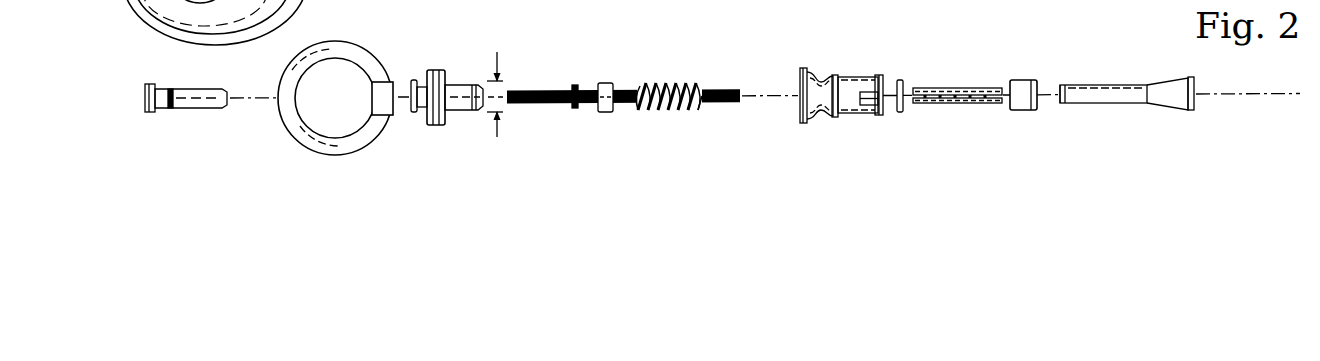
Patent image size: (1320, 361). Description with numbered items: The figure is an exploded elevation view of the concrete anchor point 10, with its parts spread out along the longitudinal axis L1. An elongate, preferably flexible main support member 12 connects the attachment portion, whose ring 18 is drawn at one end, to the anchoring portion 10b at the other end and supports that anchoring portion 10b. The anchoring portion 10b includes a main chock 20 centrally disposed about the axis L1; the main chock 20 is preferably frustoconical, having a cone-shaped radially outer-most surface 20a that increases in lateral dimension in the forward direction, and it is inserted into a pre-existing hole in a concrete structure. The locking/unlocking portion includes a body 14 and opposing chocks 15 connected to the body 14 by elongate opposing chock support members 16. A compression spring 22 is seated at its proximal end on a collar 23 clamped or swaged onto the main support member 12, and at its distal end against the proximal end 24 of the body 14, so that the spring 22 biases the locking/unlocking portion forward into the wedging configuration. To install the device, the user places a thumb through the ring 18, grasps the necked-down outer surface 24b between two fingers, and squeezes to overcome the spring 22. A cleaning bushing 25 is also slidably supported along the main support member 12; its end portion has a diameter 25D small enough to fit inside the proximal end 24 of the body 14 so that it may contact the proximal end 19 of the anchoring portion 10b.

The anchor point 10 is at (1007, 20).
The anchoring portion 10b is at (1107, 112).
The main support member 12 is at (552, 88).
The body 14 is at (860, 62).
The opposing chock 15 is at (1022, 72).
The opposing chock support member 16 is at (957, 80).
The ring 18 is at (373, 53).
The proximal end 19 is at (1058, 104).
The main chock 20 is at (1167, 92).
The radially outer-most surface 20a is at (1165, 110).
The compression spring 22 is at (664, 76).
The collar 23 is at (606, 83).
The proximal end 24 is at (814, 85).
The necked-down outer surface 24b is at (820, 116).
The cleaning bushing 25 is at (437, 130).
The diameter 25D is at (495, 58).
The longitudinal axis L1 is at (1265, 92).